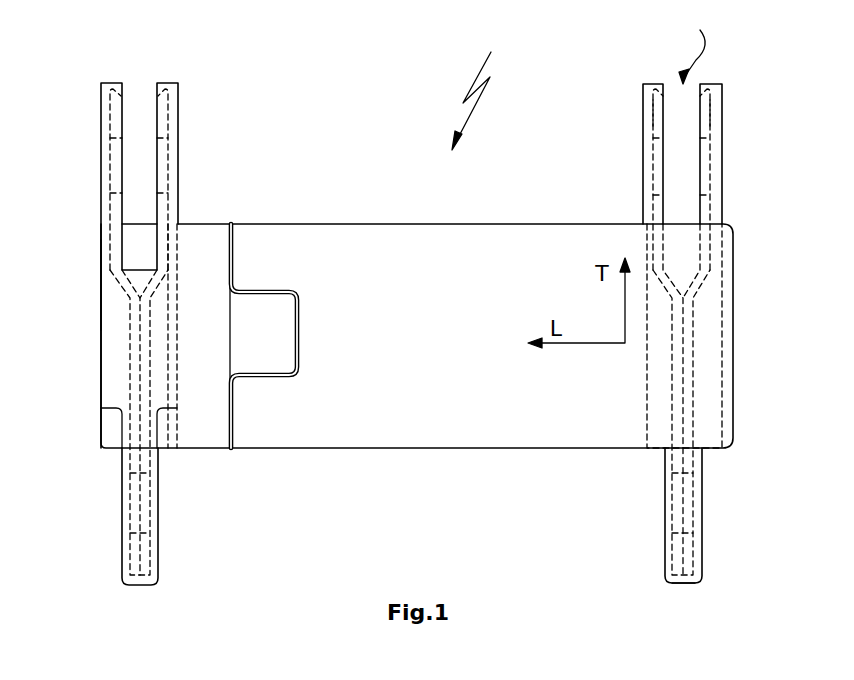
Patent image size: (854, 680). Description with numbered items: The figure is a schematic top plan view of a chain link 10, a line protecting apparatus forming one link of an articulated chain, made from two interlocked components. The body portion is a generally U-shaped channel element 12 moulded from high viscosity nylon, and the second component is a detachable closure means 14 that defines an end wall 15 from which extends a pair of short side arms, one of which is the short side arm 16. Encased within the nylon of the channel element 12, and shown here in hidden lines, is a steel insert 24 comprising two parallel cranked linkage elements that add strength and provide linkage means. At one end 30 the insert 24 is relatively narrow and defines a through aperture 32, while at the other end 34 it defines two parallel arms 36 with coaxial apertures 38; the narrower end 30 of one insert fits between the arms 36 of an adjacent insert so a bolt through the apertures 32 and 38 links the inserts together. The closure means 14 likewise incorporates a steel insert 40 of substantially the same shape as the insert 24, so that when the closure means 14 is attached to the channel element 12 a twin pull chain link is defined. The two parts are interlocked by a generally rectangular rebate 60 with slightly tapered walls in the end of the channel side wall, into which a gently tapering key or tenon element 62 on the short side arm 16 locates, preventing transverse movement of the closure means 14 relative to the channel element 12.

The chain link 10 is at (483, 90).
The U-shaped channel element 12 is at (553, 433).
The detachable closure means 14 is at (107, 352).
The end wall 15 is at (110, 300).
The short side arm 16 is at (204, 440).
The steel insert 24 is at (693, 355).
The end of insert 30 is at (681, 590).
The through aperture 32 is at (688, 510).
The other end of insert 34 is at (698, 44).
The parallel arms 36 is at (655, 85).
The coaxial apertures 38 is at (652, 163).
The steel insert 40 is at (135, 381).
The rebate 60 is at (306, 318).
The tenon element 62 is at (280, 348).